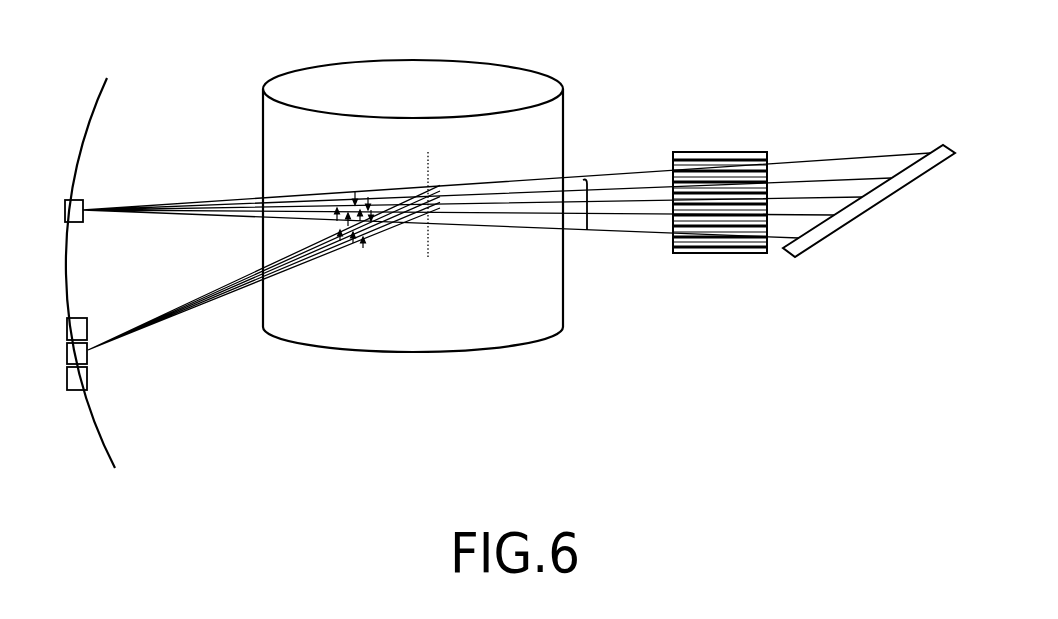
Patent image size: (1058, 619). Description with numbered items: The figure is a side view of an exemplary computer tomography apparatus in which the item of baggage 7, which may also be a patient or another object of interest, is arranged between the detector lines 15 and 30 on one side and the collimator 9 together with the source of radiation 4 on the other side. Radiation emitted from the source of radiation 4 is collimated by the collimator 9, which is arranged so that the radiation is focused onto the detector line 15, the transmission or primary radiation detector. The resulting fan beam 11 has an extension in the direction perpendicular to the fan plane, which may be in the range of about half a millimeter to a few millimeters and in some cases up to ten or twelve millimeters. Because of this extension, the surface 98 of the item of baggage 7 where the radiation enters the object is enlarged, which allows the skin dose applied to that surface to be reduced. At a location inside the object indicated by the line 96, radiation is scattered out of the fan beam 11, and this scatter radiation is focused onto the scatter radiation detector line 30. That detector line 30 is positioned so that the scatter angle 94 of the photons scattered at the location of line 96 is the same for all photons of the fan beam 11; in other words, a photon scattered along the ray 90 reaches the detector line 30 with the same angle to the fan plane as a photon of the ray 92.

The source of radiation 4 is at (840, 228).
The item of baggage 7 is at (467, 60).
The collimator 9 is at (726, 151).
The fan beam 11 is at (626, 173).
The detector line 15 is at (83, 207).
The scatter radiation detector line 30 is at (80, 357).
The ray 90 is at (527, 178).
The ray 92 is at (530, 232).
The scatter angle 94 is at (410, 220).
The line 96 is at (430, 244).
The surface 98 is at (590, 208).